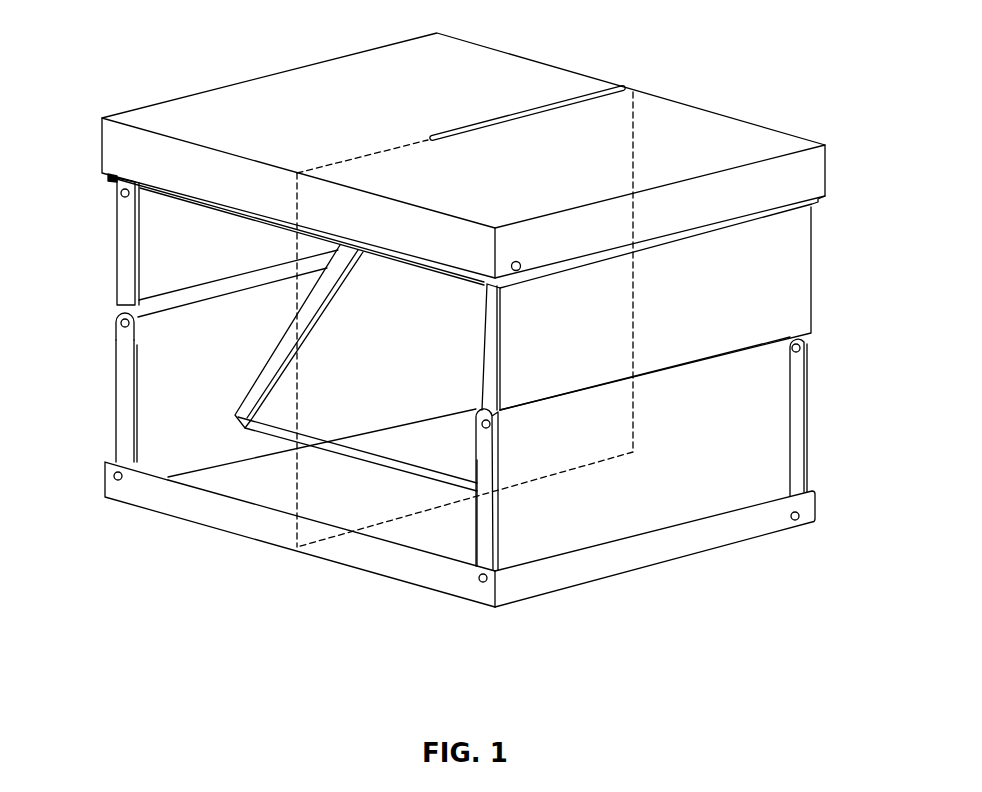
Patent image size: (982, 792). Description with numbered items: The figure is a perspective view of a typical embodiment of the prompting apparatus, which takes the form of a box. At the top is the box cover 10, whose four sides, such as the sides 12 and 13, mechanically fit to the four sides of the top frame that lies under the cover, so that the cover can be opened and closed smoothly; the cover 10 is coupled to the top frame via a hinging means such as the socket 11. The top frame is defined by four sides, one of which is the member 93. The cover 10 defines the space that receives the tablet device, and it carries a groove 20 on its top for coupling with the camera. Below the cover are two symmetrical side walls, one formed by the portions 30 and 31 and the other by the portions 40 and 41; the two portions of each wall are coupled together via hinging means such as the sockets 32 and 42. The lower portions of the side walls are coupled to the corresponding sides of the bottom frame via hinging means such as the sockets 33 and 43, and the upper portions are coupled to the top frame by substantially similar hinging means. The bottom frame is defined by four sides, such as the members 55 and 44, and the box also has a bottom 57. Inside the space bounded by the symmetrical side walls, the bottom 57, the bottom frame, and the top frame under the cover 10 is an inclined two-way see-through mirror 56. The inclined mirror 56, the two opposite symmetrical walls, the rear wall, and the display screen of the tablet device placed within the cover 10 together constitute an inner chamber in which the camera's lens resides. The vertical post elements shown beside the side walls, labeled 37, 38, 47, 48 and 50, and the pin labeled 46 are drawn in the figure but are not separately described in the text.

The box cover 10 is at (687, 132).
The socket 11 is at (522, 265).
The side of the box cover 12 is at (807, 167).
The side of the box cover 13 is at (123, 150).
The groove 20 is at (583, 100).
The side wall portion 30 is at (167, 232).
The side wall portion 31 is at (162, 348).
The socket 32 is at (125, 338).
The socket 33 is at (118, 482).
The upper left post 37 is at (125, 218).
The lower left post 38 is at (123, 432).
The side wall portion 40 is at (775, 288).
The side wall portion 41 is at (768, 415).
The socket 42 is at (497, 418).
The socket 43 is at (483, 585).
The bottom frame member 44 is at (650, 563).
The pivot pin 46 is at (795, 522).
The upper front post 47 is at (490, 363).
The lower front post 48 is at (482, 523).
The rear right post 50 is at (793, 460).
The bottom frame member 55 is at (280, 530).
The two-way see-through mirror 56 is at (330, 385).
The bottom 57 is at (432, 522).
The top frame member 93 is at (108, 180).